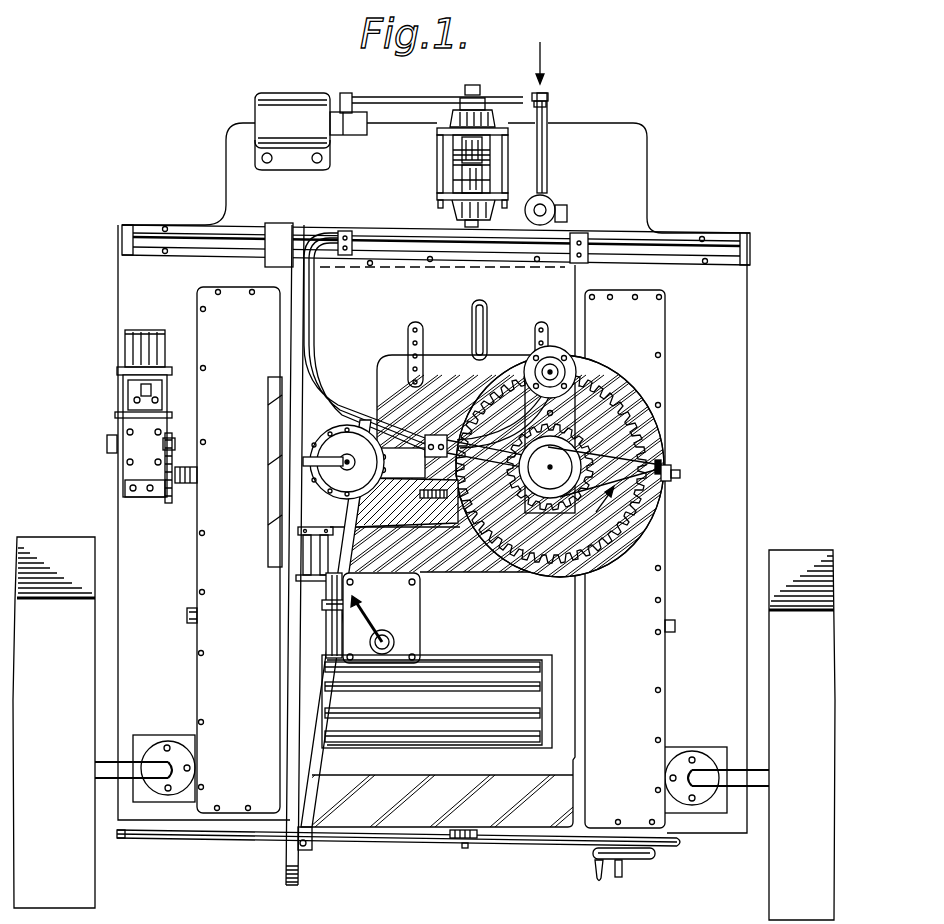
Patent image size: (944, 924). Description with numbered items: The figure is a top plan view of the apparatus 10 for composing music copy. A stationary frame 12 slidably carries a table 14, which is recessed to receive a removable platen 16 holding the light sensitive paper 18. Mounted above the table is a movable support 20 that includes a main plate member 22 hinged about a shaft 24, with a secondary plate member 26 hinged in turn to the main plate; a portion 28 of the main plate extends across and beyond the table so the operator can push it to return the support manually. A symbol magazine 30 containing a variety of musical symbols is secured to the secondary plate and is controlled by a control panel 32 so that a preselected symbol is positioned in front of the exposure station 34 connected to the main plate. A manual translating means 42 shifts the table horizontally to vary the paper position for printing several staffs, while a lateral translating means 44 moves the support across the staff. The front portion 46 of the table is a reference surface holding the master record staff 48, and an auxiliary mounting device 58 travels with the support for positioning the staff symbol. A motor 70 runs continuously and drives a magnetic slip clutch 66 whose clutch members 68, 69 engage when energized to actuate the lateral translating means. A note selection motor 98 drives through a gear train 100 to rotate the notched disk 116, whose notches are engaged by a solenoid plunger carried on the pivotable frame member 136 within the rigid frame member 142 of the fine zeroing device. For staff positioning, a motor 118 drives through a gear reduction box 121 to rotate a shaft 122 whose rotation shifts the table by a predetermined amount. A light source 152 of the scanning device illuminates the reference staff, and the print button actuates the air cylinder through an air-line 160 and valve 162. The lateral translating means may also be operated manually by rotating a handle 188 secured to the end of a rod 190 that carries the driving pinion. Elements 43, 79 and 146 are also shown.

The apparatus 10 is at (694, 197).
The stationary frame 12 is at (178, 690).
The table 14 is at (532, 641).
The removable platen 16 is at (290, 546).
The light sensitive paper 18 is at (452, 570).
The movable support 20 is at (597, 348).
The main plate member 22 is at (456, 307).
The shaft 24 is at (708, 252).
The secondary plate member 26 is at (472, 387).
The portion of main plate 28 is at (297, 808).
The symbol magazine 30 is at (521, 562).
The control panel 32 is at (75, 867).
The exposure station 34 is at (417, 501).
The manual translating means 42 is at (650, 866).
The pin 43 is at (610, 885).
The lateral translating means 44 is at (454, 156).
The front portion of table 46 is at (537, 767).
The master record staff 48 is at (570, 682).
The auxiliary mounting device 58 is at (337, 497).
The magnetic slip clutch 66 is at (433, 182).
The clutch member 68 is at (467, 151).
The clutch member 69 is at (485, 178).
The motor 70 is at (292, 117).
The right wheel 79 is at (778, 898).
The note selection motor 98 is at (556, 352).
The gear train 100 is at (586, 434).
The notched disk 116 is at (538, 573).
The motor 118 is at (128, 356).
The gear reduction box 121 is at (110, 466).
The shaft 122 is at (678, 483).
The inner pivotable frame member 136 is at (394, 475).
The rigid frame member 142 is at (640, 458).
The rack 146 is at (438, 506).
The light source 152 is at (330, 652).
The air-line 160 is at (548, 144).
The valve 162 is at (542, 195).
The handle 188 is at (472, 840).
The rod 190 is at (463, 850).